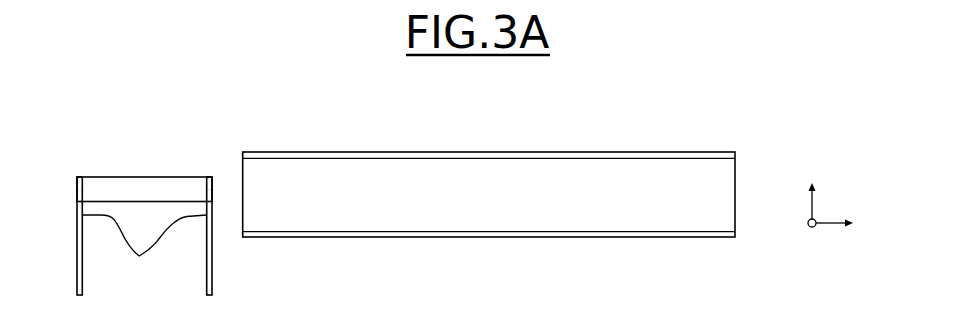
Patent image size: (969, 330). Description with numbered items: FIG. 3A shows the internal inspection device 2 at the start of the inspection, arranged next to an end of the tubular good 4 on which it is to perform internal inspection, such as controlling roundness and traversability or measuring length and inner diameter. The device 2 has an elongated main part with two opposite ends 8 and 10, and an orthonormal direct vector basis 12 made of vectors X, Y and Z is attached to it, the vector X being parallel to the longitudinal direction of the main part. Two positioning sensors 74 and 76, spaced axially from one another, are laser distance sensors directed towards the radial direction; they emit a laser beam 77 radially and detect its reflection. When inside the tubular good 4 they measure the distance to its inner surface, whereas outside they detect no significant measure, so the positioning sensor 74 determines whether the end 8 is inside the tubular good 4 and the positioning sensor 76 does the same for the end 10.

The internal inspection device 2 is at (117, 177).
The tubular good 4 is at (488, 152).
The end 8 is at (80, 177).
The end 10 is at (208, 177).
The orthonormal direct vector basis 12 is at (857, 185).
The positioning sensor 74 is at (77, 190).
The positioning sensor 76 is at (212, 190).
The laser beam 77 is at (144, 249).